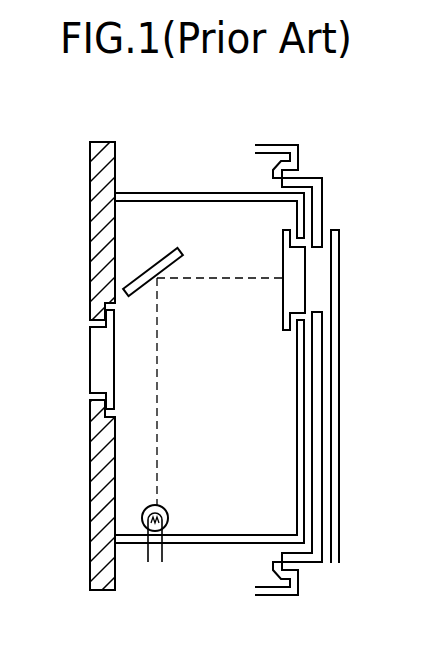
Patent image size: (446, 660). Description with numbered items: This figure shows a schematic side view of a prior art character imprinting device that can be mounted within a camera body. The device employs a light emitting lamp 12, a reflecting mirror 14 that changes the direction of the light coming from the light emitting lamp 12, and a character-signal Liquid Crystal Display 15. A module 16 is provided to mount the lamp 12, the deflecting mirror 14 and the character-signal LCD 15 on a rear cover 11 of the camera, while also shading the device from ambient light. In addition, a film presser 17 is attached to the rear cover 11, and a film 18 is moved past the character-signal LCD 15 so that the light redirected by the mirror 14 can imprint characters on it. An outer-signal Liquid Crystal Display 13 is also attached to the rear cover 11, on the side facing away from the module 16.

The rear cover 11 is at (100, 226).
The light emitting lamp 12 is at (168, 518).
The outer-signal Liquid Crystal Display 13 is at (100, 358).
The reflecting mirror 14 is at (152, 270).
The character-signal Liquid Crystal Display 15 is at (305, 280).
The module 16 is at (191, 194).
The film presser 17 is at (322, 204).
The film 18 is at (340, 380).